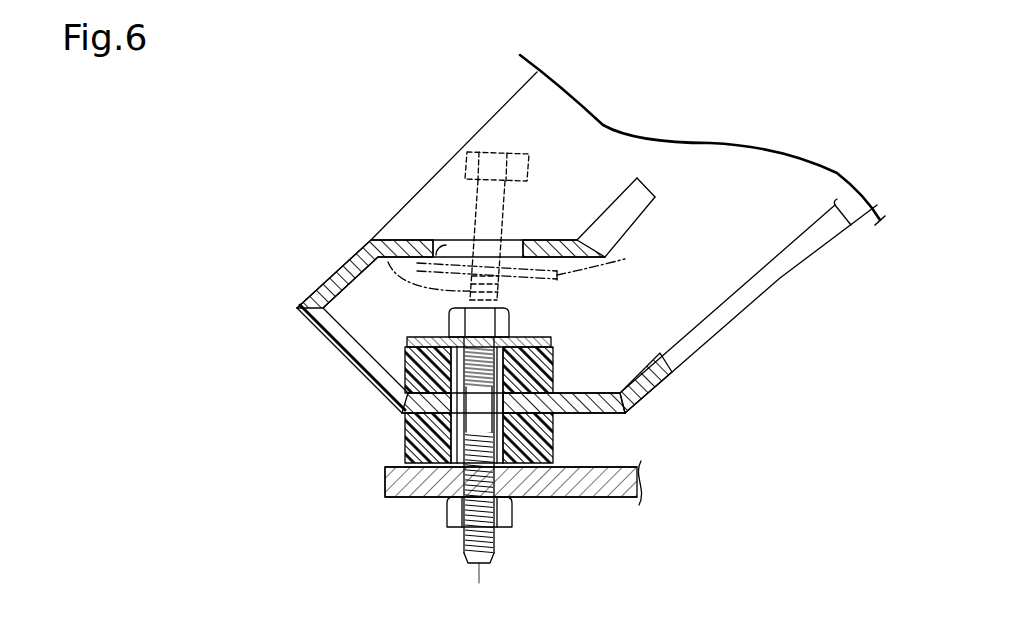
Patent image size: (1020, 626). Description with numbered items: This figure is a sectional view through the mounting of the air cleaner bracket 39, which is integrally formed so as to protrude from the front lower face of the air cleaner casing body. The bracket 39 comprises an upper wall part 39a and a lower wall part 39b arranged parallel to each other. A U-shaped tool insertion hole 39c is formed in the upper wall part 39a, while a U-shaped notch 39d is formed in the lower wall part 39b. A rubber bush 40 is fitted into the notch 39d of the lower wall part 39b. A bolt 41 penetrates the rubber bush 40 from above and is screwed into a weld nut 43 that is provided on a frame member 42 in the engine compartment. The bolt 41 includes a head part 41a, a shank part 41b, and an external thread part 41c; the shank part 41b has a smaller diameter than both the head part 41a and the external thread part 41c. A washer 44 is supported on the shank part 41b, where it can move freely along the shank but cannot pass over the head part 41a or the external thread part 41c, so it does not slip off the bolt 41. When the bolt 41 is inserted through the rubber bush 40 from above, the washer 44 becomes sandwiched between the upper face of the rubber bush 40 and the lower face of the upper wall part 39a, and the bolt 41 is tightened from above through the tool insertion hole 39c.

The bracket 39 is at (313, 254).
The upper wall part 39a is at (547, 238).
The lower wall part 39b is at (598, 415).
The tool insertion hole 39c is at (448, 240).
The notch 39d is at (450, 380).
The rubber bush 40 is at (533, 358).
The bolt 41 is at (492, 142).
The head part 41a is at (477, 190).
The shank part 41b is at (463, 166).
The external thread part 41c is at (382, 232).
The frame member 42 is at (597, 497).
The weld nut 43 is at (445, 517).
The washer 44 is at (552, 340).